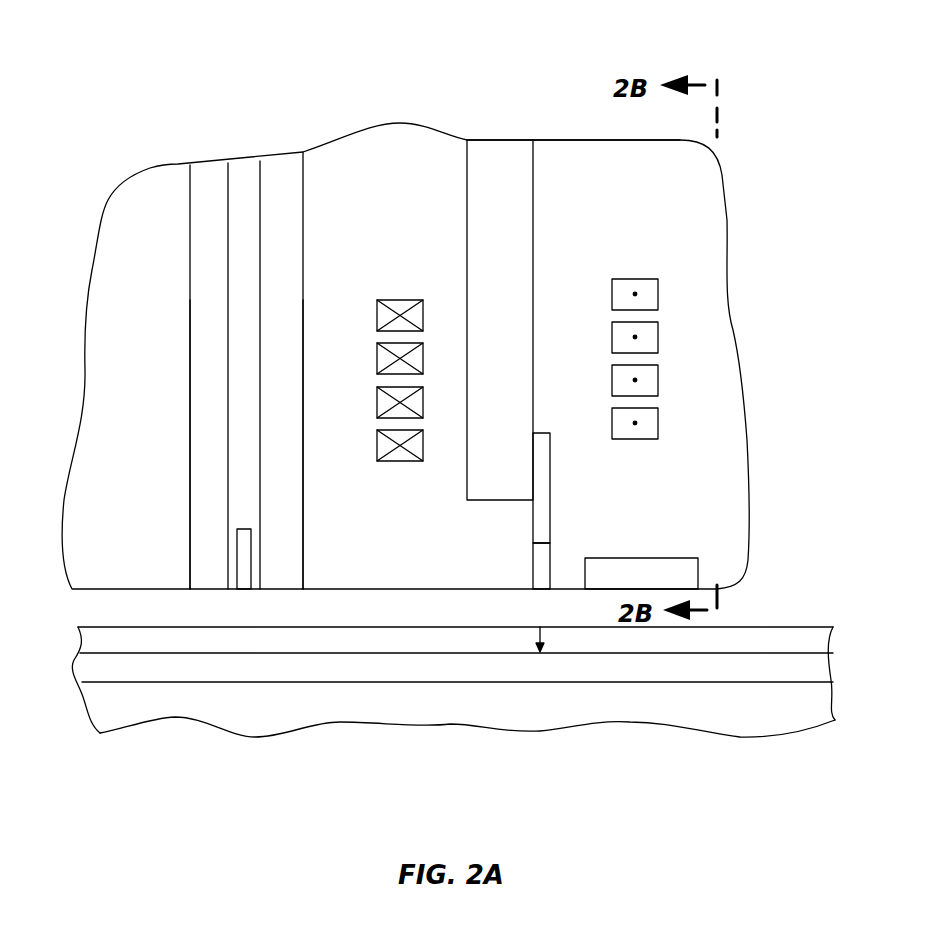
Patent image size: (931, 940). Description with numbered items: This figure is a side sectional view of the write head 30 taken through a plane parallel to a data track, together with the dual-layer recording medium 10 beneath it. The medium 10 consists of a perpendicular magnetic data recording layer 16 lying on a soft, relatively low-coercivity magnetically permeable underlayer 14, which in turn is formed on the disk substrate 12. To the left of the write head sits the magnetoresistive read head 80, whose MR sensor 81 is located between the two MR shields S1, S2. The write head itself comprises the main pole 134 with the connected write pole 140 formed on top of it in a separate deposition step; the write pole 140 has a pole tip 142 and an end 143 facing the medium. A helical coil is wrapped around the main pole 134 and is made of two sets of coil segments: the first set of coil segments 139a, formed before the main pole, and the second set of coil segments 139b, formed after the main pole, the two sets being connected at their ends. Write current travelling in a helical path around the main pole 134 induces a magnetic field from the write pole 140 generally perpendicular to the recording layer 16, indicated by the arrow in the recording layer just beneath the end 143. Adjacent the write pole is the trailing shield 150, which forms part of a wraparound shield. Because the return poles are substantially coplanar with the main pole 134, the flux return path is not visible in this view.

The medium 10 is at (98, 745).
The disk substrate 12 is at (100, 712).
The soft underlayer (SUL) 14 is at (97, 675).
The perpendicular magnetic data recording layer (RL) 16 is at (100, 640).
The write head 30 is at (757, 65).
The MR read head 80 is at (320, 128).
The MR sensor 81 is at (243, 528).
The MR shield S1 is at (196, 557).
The MR shield S2 is at (287, 569).
The main pole 134 is at (532, 311).
The first set of coil segments 139a is at (395, 299).
The second set of coil segments 139b is at (657, 301).
The write pole (WP) 140 is at (541, 511).
The pole tip 142 is at (540, 570).
The end 143 is at (546, 590).
The trailing shield (TS) 150 is at (641, 557).